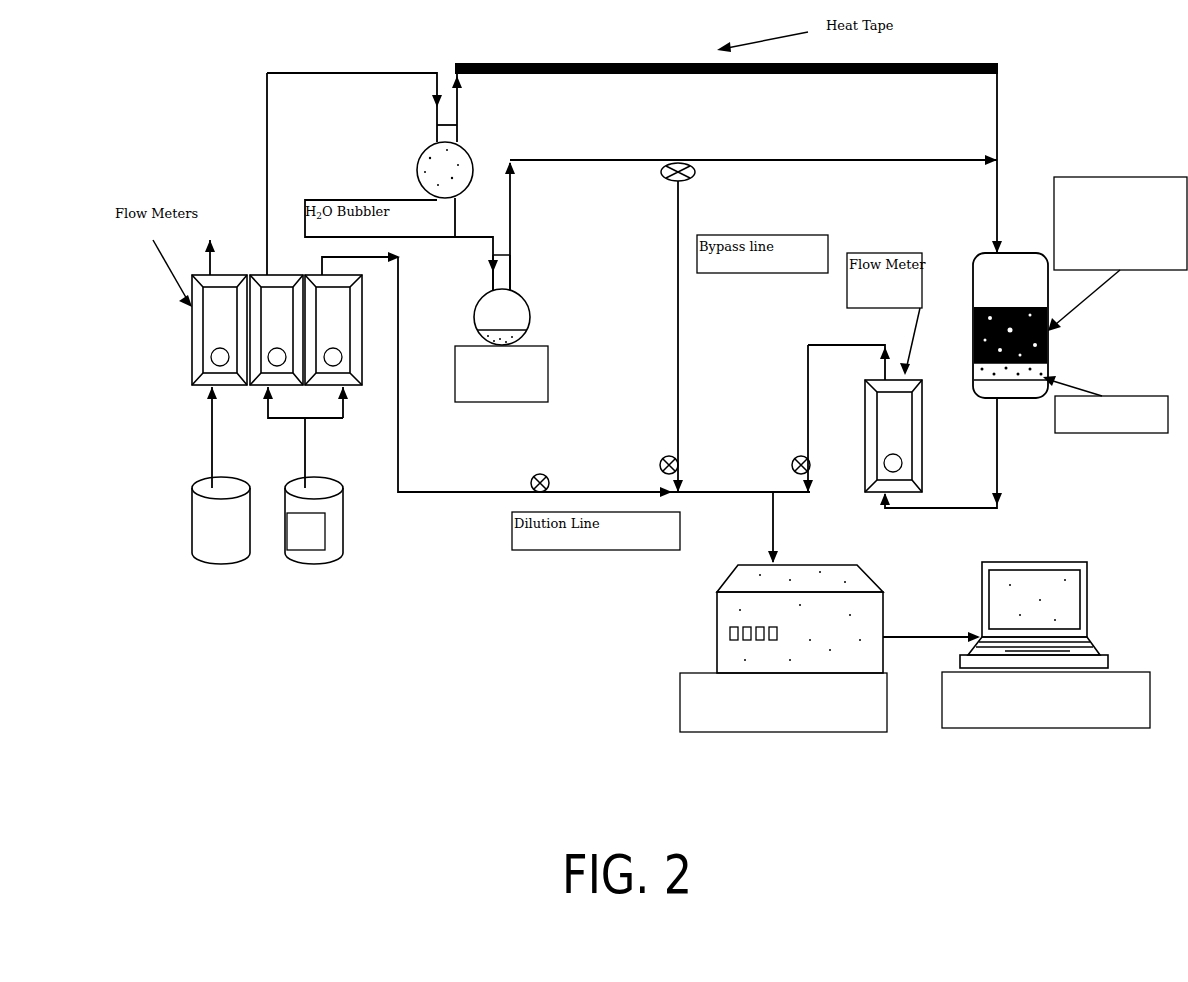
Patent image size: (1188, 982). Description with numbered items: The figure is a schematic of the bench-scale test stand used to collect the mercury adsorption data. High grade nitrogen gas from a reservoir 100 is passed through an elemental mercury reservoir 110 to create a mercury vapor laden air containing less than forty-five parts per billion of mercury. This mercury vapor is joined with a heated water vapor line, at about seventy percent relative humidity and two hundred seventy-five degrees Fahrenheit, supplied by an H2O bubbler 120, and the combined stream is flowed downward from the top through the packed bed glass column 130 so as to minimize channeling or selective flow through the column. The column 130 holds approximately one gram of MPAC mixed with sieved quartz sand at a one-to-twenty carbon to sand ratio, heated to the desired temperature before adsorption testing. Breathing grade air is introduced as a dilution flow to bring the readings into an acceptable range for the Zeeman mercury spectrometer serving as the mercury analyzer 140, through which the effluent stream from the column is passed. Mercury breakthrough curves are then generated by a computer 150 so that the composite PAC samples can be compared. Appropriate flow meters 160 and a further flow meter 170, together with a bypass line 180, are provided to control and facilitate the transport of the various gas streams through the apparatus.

The reservoir 100 is at (206, 566).
The elemental mercury reservoir 110 is at (530, 306).
The H2O bubbler 120 is at (466, 151).
The activated carbon/sand trap with porous frit 130 is at (1022, 253).
The mercury analyzer 140 is at (717, 632).
The computer 150 is at (1087, 603).
The flow meters 160 is at (192, 350).
The flow meter 170 is at (922, 460).
The bypass line 180 is at (680, 306).